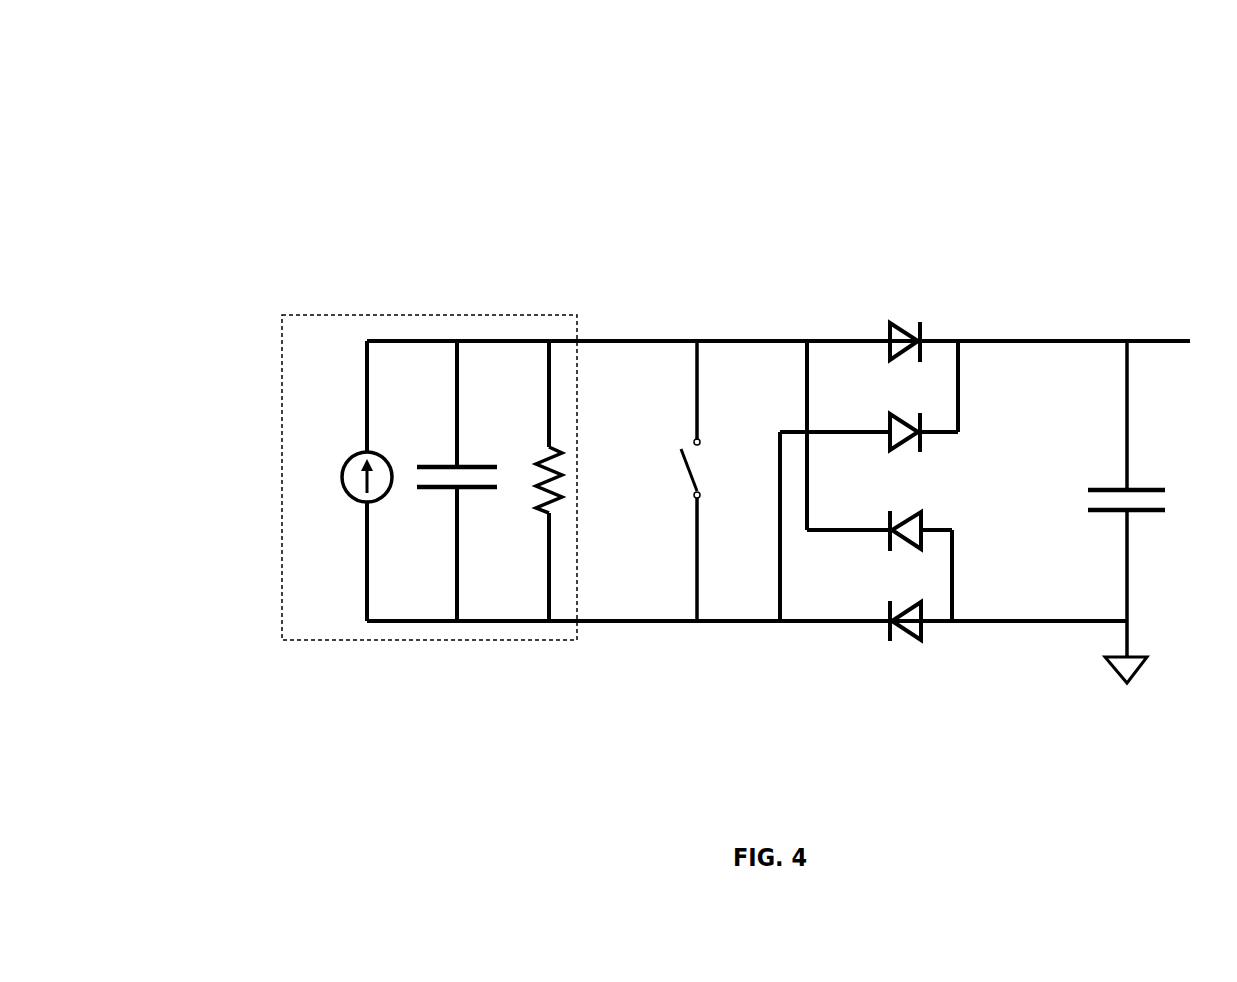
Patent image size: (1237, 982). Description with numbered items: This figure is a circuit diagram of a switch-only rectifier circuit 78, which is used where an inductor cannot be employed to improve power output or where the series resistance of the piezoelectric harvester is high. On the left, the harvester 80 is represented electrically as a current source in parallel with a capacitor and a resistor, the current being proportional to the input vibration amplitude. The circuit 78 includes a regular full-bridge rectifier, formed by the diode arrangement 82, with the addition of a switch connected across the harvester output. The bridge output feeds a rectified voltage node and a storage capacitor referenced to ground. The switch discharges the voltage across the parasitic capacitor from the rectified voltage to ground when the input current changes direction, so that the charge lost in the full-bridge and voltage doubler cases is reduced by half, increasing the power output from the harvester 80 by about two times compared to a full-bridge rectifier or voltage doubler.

The switch-only rectifier circuit 78 is at (222, 132).
The harvester 80 is at (436, 461).
The diode arrangement 82 is at (888, 415).